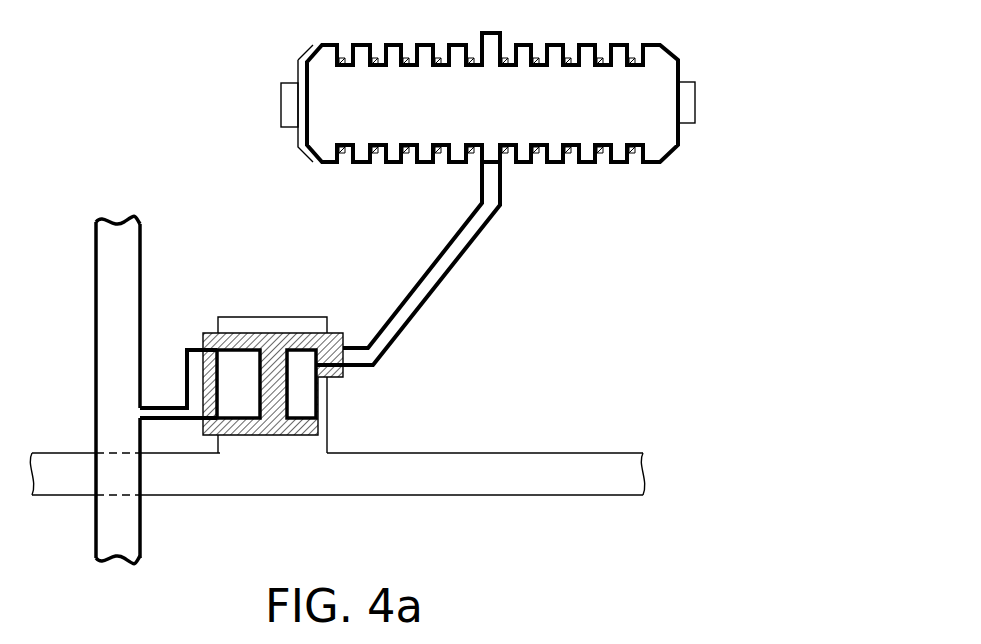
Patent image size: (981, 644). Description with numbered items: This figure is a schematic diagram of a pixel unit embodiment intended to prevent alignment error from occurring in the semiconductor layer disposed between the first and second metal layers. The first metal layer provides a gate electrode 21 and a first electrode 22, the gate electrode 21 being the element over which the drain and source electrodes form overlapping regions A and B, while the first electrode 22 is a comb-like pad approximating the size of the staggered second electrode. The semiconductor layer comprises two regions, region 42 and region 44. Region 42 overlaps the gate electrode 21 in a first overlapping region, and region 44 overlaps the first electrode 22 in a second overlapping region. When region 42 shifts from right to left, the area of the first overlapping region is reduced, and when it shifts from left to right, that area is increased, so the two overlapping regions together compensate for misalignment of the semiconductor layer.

The gate electrode 21 is at (293, 317).
The first electrode 22 is at (695, 102).
The semiconductor layer region 42 is at (273, 333).
The semiconductor layer region 44 is at (635, 152).